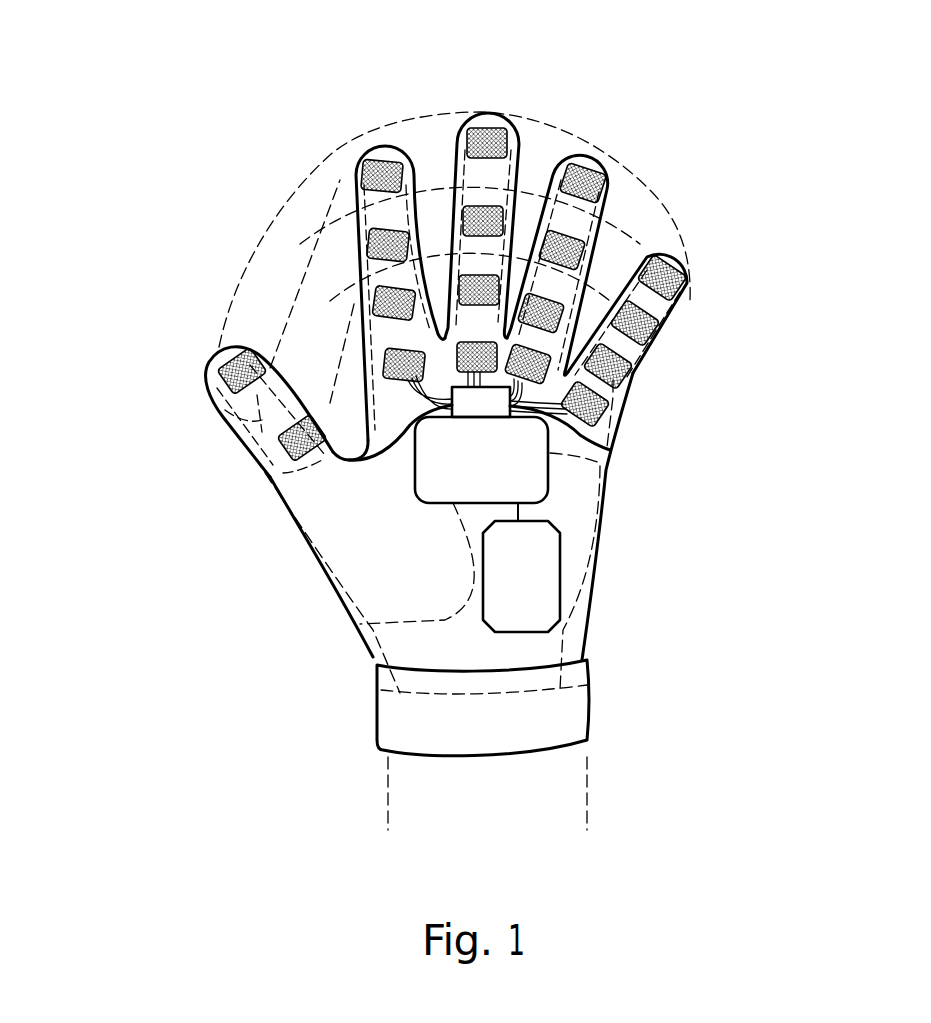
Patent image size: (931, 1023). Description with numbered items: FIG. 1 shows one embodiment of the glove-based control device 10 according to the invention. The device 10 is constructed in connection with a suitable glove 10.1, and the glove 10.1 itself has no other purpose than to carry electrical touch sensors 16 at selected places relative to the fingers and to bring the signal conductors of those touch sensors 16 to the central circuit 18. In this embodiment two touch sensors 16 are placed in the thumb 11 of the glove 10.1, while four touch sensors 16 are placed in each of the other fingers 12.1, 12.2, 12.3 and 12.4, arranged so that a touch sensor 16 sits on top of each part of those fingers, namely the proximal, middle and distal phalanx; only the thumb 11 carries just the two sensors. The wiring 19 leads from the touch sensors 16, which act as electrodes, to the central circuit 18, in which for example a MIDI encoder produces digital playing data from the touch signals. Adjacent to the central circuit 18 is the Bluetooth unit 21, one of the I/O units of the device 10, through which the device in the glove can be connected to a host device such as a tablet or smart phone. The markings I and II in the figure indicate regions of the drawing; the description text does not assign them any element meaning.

The device 10 is at (200, 205).
The glove 10.1 is at (402, 557).
The thumb 11 is at (253, 425).
The finger 12.1 is at (380, 146).
The finger 12.2 is at (491, 113).
The finger 12.3 is at (590, 160).
The finger 12.4 is at (682, 243).
The touch sensor 16 is at (387, 347).
The central circuit 18 is at (532, 483).
The wiring 19 is at (380, 397).
The Bluetooth unit 21 is at (547, 610).
The detail view I is at (638, 135).
The detail view II is at (255, 475).